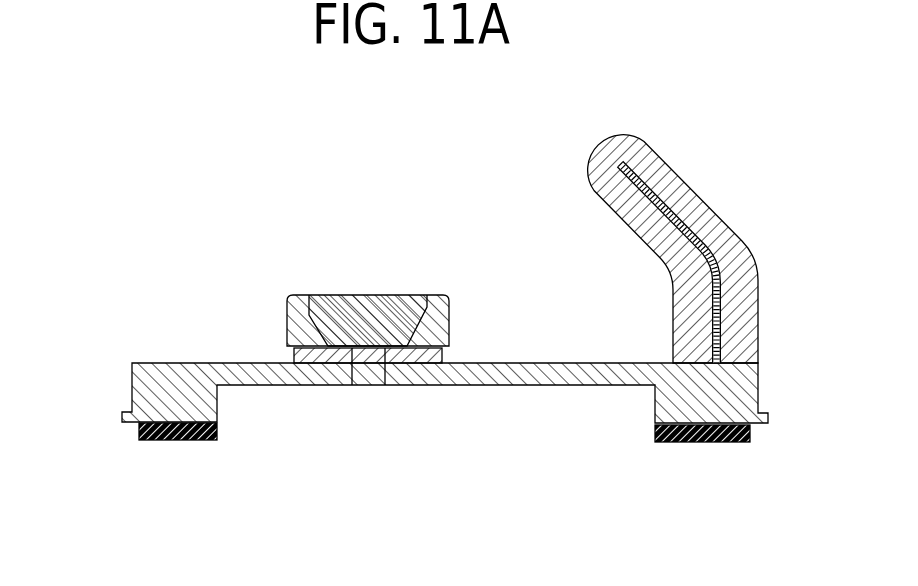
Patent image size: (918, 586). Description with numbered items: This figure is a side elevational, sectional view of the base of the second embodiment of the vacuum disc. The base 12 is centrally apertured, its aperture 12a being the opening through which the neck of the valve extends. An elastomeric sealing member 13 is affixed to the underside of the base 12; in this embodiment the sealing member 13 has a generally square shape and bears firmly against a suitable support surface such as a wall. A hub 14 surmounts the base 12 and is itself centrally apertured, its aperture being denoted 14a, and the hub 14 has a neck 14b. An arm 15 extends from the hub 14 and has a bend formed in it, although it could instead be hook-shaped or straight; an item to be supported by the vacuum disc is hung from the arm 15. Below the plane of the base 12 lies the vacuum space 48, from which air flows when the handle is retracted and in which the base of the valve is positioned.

The base 12 is at (148, 363).
The aperture 12a is at (365, 384).
The sealing member 13 is at (177, 441).
The hub 14 is at (449, 318).
The aperture 14a is at (317, 320).
The neck 14b is at (294, 356).
The arm 15 is at (686, 183).
The vacuum space 48 is at (610, 430).